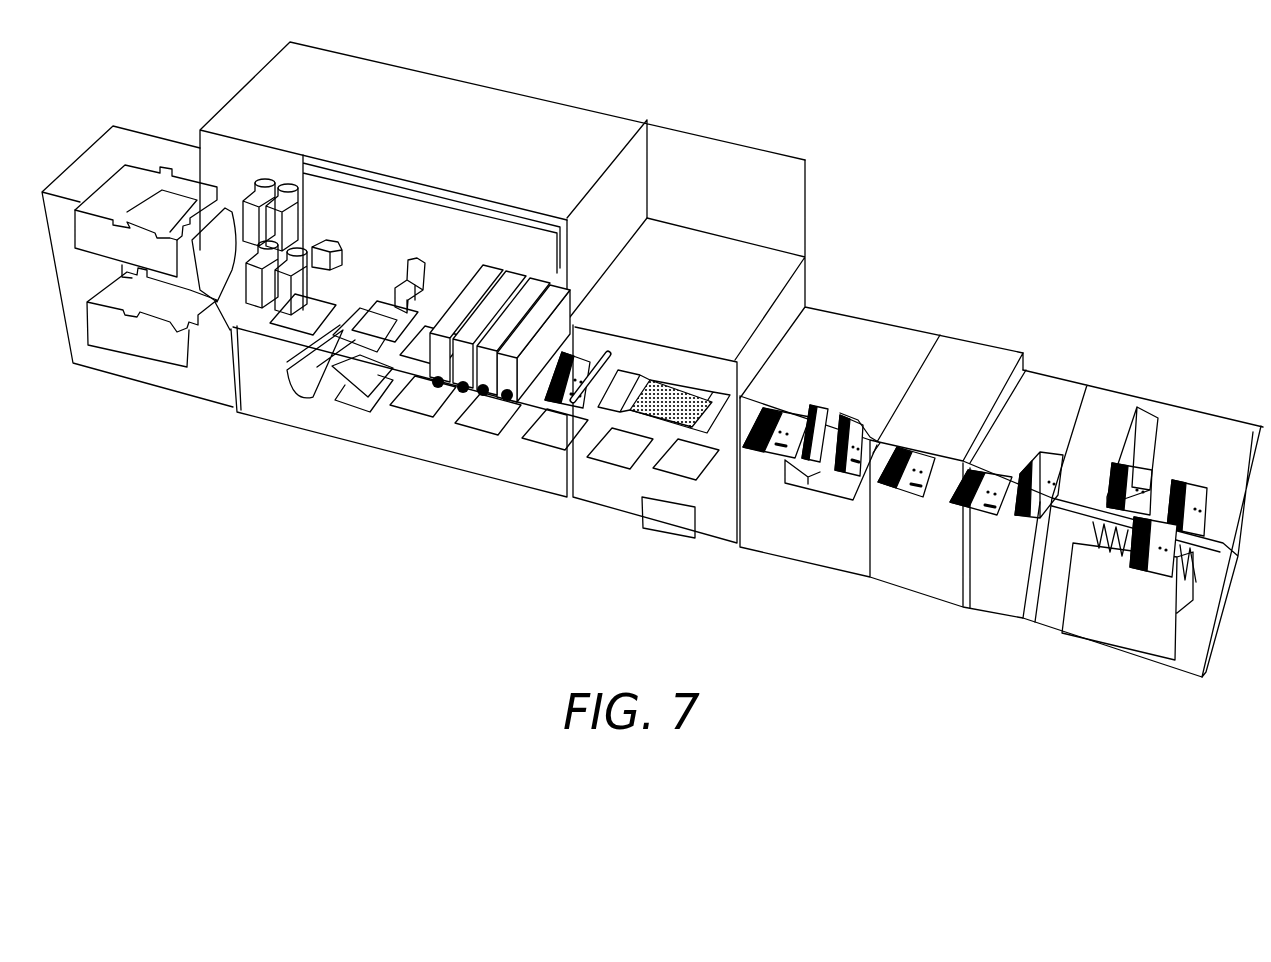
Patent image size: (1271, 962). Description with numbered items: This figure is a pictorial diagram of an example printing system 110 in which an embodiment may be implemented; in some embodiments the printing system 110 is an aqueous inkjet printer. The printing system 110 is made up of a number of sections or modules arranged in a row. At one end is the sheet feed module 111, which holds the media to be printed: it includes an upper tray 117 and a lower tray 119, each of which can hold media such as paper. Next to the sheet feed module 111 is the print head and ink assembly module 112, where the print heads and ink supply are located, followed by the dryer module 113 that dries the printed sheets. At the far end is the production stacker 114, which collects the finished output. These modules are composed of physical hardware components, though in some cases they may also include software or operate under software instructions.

The printing system 110 is at (910, 264).
The sheet feed module 111 is at (172, 118).
The print head and ink assembly module 112 is at (505, 272).
The dryer module 113 is at (669, 366).
The production stacker 114 is at (1189, 460).
The upper tray 117 is at (117, 193).
The lower tray 119 is at (137, 337).